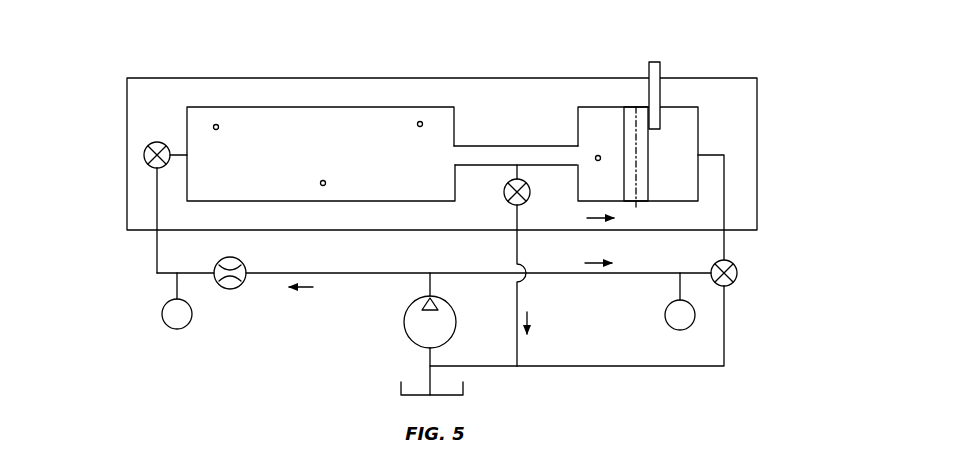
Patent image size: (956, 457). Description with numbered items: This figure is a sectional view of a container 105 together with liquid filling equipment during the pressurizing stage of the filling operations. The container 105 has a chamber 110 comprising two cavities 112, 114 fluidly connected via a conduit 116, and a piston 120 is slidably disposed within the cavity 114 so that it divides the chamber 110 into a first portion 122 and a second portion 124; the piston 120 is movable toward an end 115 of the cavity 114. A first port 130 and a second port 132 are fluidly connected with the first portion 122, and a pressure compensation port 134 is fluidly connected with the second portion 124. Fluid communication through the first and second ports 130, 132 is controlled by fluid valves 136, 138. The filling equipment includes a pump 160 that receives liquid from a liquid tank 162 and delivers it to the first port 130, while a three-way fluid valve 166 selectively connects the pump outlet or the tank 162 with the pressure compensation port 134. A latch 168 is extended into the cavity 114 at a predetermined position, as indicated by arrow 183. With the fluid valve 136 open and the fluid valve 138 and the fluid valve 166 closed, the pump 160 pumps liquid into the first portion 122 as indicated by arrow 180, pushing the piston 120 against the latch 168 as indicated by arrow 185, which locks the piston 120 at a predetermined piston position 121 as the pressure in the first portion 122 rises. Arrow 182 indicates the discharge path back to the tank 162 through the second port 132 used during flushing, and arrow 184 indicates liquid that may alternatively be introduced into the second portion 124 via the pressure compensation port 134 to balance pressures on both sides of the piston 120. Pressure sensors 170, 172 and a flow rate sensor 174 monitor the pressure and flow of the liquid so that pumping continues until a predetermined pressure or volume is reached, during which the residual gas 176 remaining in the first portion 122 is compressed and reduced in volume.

The container 105 is at (133, 73).
The chamber 110 is at (442, 113).
The cavity 112 is at (252, 110).
The cavity 114 is at (582, 107).
The end of the cavity 115 is at (700, 128).
The conduit 116 is at (543, 145).
The piston 120 is at (626, 120).
The predetermined piston position 121 is at (636, 206).
The first portion 122 is at (375, 130).
The second portion 124 is at (683, 129).
The first port 130 is at (157, 212).
The second port 132 is at (517, 225).
The pressure compensation port 134 is at (725, 212).
The fluid valve 136 is at (145, 152).
The fluid valve 138 is at (505, 192).
The pump 160 is at (404, 320).
The liquid tank 162 is at (401, 386).
The three-way fluid valve 166 is at (737, 274).
The latch 168 is at (662, 90).
The pressure sensor 170 is at (162, 313).
The pressure sensor 172 is at (665, 318).
The flow rate sensor 174 is at (233, 290).
The residual gas 176 is at (215, 124).
The arrow 180 is at (300, 288).
The arrow 182 is at (528, 322).
The arrow 183 is at (637, 70).
The arrow 184 is at (597, 264).
The arrow 185 is at (597, 219).